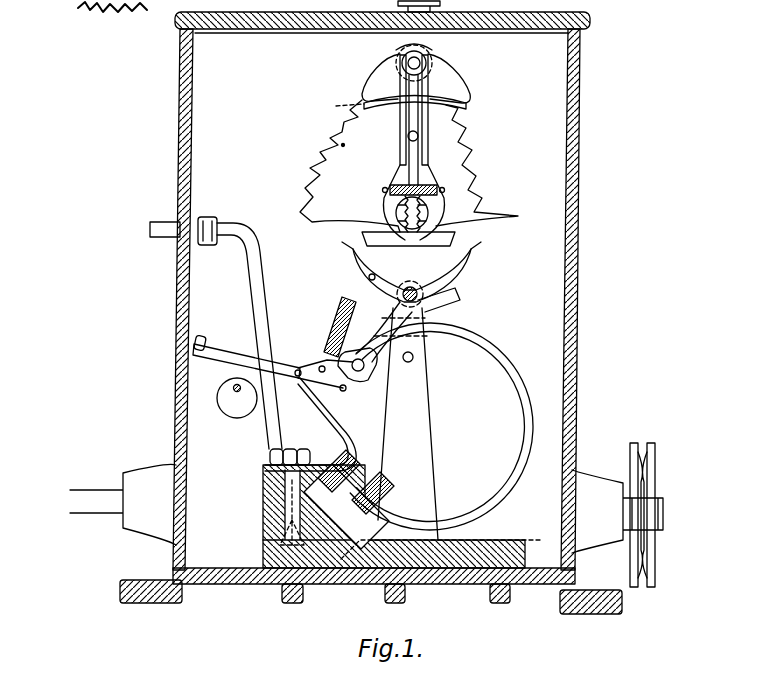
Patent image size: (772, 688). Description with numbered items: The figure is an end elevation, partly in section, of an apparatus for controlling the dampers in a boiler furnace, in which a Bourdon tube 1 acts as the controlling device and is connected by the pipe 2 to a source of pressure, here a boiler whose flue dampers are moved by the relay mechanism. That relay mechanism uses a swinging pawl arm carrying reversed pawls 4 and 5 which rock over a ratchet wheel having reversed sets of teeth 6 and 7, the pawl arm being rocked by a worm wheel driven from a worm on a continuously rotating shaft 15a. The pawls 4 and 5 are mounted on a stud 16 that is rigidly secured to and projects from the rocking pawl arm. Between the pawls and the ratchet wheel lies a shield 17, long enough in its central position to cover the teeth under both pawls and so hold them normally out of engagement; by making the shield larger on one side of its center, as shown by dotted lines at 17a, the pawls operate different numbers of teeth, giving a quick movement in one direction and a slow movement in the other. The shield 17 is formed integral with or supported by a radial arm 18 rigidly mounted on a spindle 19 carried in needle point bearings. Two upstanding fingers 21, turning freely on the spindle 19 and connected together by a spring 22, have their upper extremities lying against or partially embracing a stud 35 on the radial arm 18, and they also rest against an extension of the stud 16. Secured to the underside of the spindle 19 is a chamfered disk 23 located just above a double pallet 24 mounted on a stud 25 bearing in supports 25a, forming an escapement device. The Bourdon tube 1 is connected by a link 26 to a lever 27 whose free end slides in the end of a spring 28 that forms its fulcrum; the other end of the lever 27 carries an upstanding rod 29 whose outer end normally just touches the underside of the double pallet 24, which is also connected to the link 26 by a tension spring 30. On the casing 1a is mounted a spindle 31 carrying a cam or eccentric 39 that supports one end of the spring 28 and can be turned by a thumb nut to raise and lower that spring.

The Bourdon tube 1 is at (518, 409).
The casing 1a is at (580, 356).
The pipe 2 is at (262, 279).
The pawl 4 is at (378, 75).
The pawl 5 is at (455, 78).
The set of teeth 6 is at (350, 142).
The set of teeth 7 is at (340, 155).
The continuously rotating shaft 15a is at (663, 505).
The stud 16 is at (420, 58).
The shield 17 is at (455, 101).
The enlarged shield portion 17a is at (338, 107).
The radial arm 18 is at (410, 166).
The spindle 19 is at (425, 220).
The upstanding fingers 21 is at (438, 200).
The spring 22 is at (436, 188).
The chamfered disk 23 is at (408, 252).
The double pallet 24 is at (478, 270).
The stud 25 is at (430, 296).
The supports 25a is at (415, 455).
The link 26 is at (352, 378).
The lever 27 is at (230, 354).
The spring 28 is at (303, 418).
The upstanding rod 29 is at (414, 350).
The tension spring 30 is at (332, 318).
The spindle 31 is at (233, 390).
The stud 35 is at (418, 136).
The cam 39 is at (240, 410).